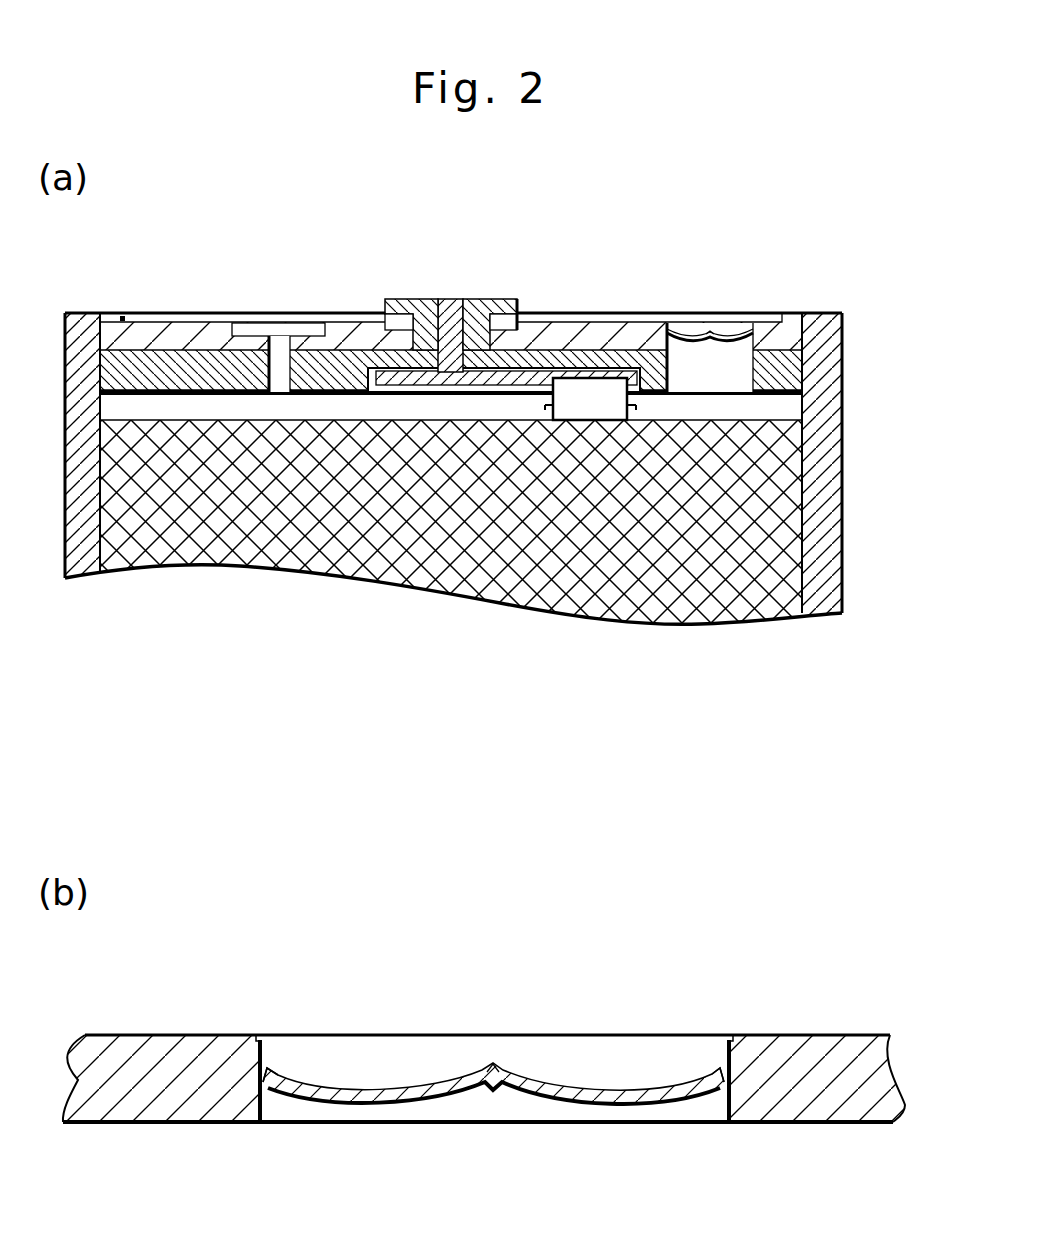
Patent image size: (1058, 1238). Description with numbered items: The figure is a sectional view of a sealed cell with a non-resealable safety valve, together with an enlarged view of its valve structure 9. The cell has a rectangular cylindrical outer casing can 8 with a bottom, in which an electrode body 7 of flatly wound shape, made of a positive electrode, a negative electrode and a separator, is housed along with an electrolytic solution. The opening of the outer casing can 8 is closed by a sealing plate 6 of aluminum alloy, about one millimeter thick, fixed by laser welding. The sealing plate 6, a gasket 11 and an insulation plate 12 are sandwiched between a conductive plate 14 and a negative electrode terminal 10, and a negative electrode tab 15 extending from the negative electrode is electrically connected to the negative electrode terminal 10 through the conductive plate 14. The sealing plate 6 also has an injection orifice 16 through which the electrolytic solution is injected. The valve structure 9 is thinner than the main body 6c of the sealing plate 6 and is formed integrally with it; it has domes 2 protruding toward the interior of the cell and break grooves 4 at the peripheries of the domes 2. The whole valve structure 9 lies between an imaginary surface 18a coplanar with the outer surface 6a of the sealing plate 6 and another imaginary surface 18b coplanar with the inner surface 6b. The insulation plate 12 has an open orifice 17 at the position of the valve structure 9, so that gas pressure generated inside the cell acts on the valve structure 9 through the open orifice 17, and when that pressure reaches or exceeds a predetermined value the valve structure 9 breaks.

The domes 2 is at (693, 332).
The break grooves 4 is at (268, 1095).
The sealing plate 6 is at (773, 318).
The outer surface of the sealing plate 6a is at (204, 1035).
The inner surface of the sealing plate 6b is at (181, 1124).
The main body of the sealing plate 6c is at (116, 1100).
The electrode body 7 is at (763, 480).
The outer casing can 8 is at (818, 398).
The valve structure 9 is at (711, 327).
The negative electrode terminal 10 is at (422, 300).
The gasket 11 is at (388, 325).
The insulation plate 12 is at (118, 368).
The conductive plate 14 is at (537, 360).
The negative electrode tab 15 is at (586, 395).
The injection orifice 16 is at (270, 330).
The open orifice 17 is at (735, 372).
The imaginary surface 18a is at (567, 1034).
The imaginary surface 18b is at (610, 1124).